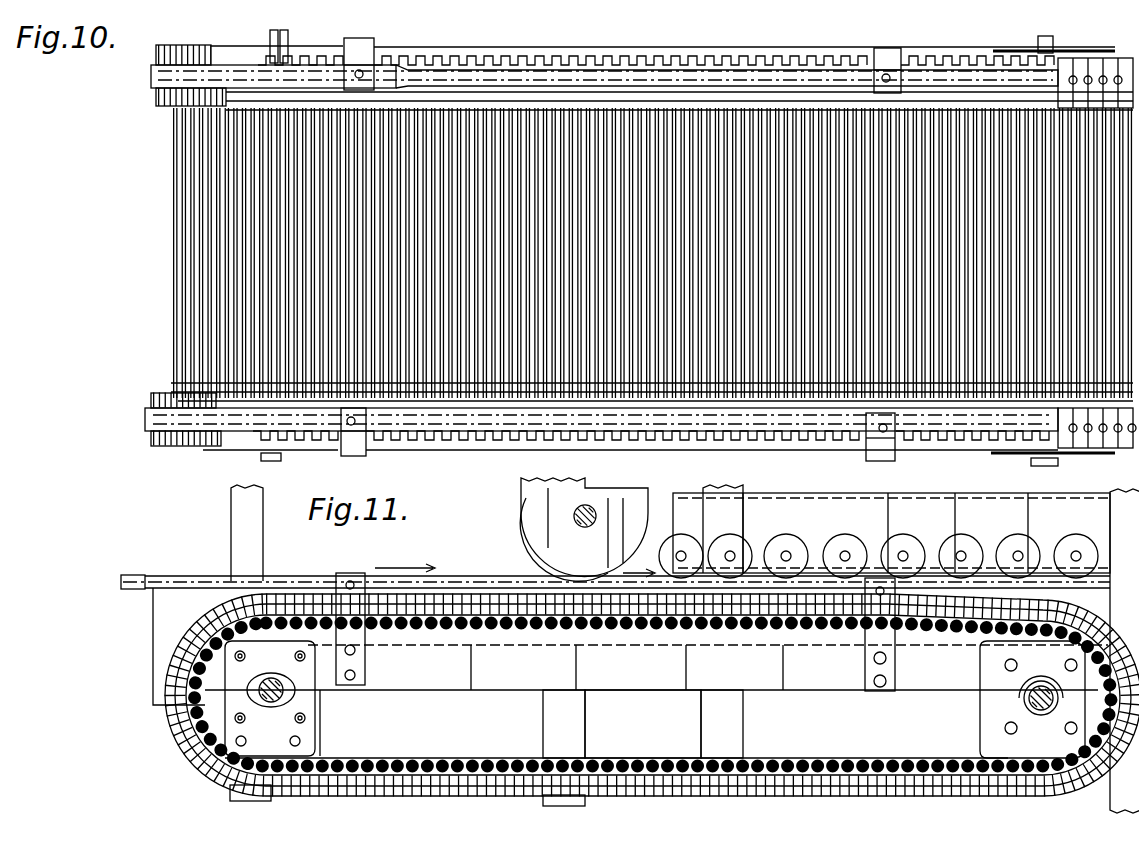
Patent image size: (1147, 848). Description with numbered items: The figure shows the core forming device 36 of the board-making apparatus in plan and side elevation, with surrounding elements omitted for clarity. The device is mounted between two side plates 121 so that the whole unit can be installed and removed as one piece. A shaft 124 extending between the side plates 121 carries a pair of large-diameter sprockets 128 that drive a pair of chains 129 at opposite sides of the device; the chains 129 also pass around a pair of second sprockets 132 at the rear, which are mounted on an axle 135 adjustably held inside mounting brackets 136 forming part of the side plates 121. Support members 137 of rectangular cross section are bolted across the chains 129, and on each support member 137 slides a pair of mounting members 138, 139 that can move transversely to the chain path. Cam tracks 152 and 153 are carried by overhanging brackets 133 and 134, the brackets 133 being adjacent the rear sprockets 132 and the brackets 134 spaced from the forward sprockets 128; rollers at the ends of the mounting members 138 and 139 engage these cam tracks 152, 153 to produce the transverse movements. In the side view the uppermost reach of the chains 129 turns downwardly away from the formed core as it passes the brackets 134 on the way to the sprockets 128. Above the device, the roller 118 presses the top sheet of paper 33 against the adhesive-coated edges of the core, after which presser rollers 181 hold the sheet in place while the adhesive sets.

In FIG. 10, the core forming device 36 is at (157, 209).
In FIG. 11, the core forming device 36 is at (768, 689).
In FIG. 11, the sheet of paper 33 is at (514, 522).
In FIG. 11, the roller 118 is at (595, 495).
In FIG. 11, the side plates 121 is at (688, 665).
In FIG. 11, the shaft 124 is at (1020, 696).
In FIG. 11, the sprockets 128 is at (985, 698).
In FIG. 11, the chains 129 is at (575, 629).
In FIG. 11, the second sprockets 132 is at (310, 692).
In FIG. 10, the side plates 133 is at (345, 448).
In FIG. 11, the side plates 133 is at (343, 568).
In FIG. 10, the side plates 134 is at (358, 32).
In FIG. 11, the side plates 134 is at (878, 535).
In FIG. 11, the axle 135 is at (263, 682).
In FIG. 11, the mounting brackets 136 is at (325, 732).
In FIG. 11, the support members 137 is at (500, 600).
In FIG. 10, the mounting member 138 is at (308, 432).
In FIG. 10, the mounting member 139 is at (315, 52).
In FIG. 10, the cam track 152 is at (532, 437).
In FIG. 10, the cam track 153 is at (468, 41).
In FIG. 11, the presser rollers 181 is at (835, 540).